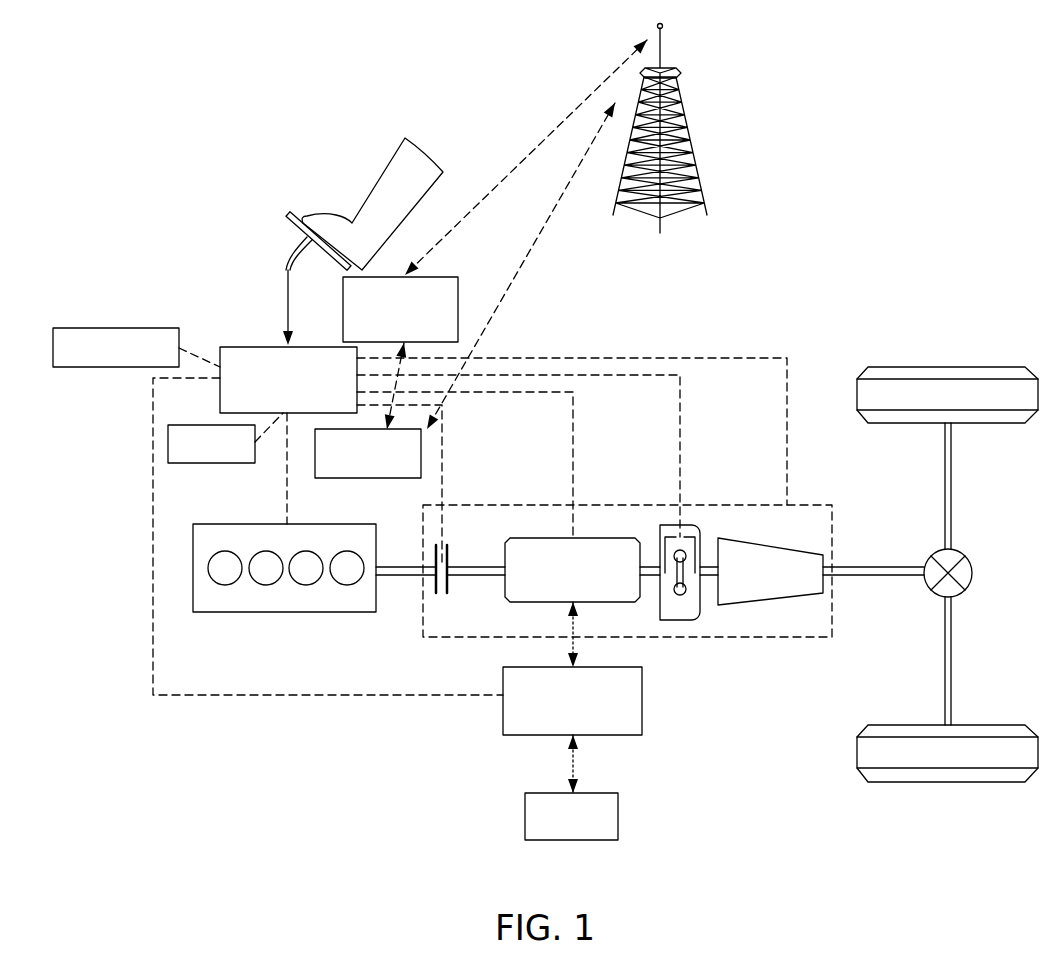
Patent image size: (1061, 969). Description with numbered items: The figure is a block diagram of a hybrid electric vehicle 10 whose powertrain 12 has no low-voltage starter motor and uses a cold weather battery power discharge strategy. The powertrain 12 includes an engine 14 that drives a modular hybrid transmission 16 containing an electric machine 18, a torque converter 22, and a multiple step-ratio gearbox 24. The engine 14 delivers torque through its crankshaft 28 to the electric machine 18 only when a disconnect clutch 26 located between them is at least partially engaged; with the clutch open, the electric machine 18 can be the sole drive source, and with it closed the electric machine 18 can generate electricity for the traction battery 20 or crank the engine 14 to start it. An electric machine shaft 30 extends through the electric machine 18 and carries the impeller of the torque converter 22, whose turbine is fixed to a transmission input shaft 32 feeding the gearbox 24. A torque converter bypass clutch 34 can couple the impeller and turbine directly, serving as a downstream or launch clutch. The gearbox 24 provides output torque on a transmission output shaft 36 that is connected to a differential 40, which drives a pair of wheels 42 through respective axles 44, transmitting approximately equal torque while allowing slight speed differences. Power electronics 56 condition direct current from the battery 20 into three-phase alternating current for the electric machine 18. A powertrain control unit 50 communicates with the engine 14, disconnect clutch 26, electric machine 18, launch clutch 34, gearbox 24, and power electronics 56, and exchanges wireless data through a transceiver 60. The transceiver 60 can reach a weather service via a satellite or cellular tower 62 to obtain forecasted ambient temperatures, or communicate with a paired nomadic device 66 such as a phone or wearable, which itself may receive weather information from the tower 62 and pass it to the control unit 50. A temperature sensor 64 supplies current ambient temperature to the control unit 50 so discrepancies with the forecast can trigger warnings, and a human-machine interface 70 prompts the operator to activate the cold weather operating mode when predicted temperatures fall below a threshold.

The hybrid electric vehicle 10 is at (840, 308).
The powertrain 12 is at (375, 737).
The engine 14 is at (288, 613).
The transmission 16 is at (595, 505).
The electric machine 18 is at (527, 537).
The traction battery 20 is at (618, 815).
The torque converter 22 is at (680, 620).
The gearbox 24 is at (758, 604).
The disconnect clutch 26 is at (437, 587).
The crankshaft 28 is at (388, 565).
The electric machine shaft 30 is at (465, 565).
The transmission input shaft 32 is at (713, 567).
The torque converter bypass clutch 34 is at (680, 527).
The transmission output shaft 36 is at (887, 577).
The differential 40 is at (973, 568).
The wheels 42 is at (943, 367).
The axles 44 is at (951, 492).
The powertrain control unit 50 is at (235, 347).
The power electronics 56 is at (642, 708).
The transceiver 60 is at (422, 455).
The cellular tower 62 is at (628, 95).
The temperature sensor 64 is at (117, 328).
The nomadic device 66 is at (458, 318).
The human-machine interface 70 is at (183, 465).